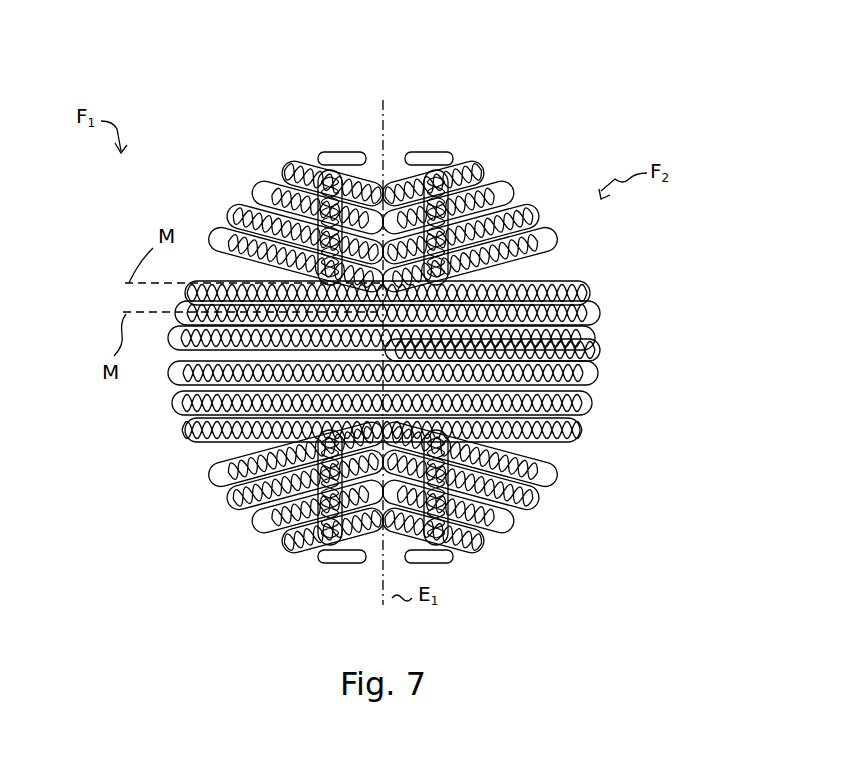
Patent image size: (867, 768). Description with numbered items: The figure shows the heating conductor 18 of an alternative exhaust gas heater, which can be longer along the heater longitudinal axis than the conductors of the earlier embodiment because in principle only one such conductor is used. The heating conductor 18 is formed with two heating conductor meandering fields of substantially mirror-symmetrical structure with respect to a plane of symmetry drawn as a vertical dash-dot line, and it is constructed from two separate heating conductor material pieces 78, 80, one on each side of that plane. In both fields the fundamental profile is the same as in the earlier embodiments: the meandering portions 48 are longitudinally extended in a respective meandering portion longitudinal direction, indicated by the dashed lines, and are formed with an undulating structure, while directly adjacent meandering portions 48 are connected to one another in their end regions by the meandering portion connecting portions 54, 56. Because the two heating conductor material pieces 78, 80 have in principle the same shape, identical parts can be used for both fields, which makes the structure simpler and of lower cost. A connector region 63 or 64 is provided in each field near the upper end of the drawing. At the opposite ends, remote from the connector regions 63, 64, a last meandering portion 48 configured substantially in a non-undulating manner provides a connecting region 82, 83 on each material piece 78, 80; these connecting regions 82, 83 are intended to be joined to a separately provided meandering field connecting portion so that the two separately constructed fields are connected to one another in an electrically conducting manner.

The heating conductor 18 is at (551, 131).
The meandering portion 48 is at (231, 262).
The meandering portion connecting portion 54 is at (211, 254).
The meandering portion connecting portion 56 is at (365, 197).
The connector region 63 is at (332, 152).
The connector region 64 is at (430, 148).
The heating conductor material piece 78 is at (204, 485).
The heating conductor material piece 80 is at (595, 301).
The connecting region 82 is at (331, 564).
The connecting region 83 is at (440, 566).